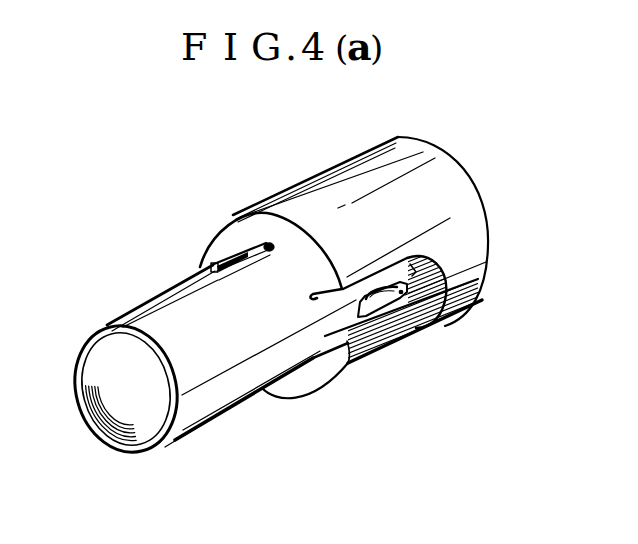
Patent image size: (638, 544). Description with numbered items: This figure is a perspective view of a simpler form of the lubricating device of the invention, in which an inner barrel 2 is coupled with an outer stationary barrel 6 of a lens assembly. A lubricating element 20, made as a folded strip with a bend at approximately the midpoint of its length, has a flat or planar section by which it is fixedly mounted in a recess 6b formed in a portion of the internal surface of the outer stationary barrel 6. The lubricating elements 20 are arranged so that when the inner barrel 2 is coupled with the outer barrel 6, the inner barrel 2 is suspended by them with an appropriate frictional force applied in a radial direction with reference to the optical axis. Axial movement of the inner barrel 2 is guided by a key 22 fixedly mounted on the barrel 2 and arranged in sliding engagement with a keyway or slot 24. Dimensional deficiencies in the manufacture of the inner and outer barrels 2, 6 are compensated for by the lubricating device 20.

The inner barrel 2 is at (223, 388).
The outer stationary barrel 6 is at (436, 162).
The recess 6b is at (448, 286).
The lubricating element 20 is at (395, 300).
The key 22 is at (192, 236).
The keyway 24 is at (269, 243).